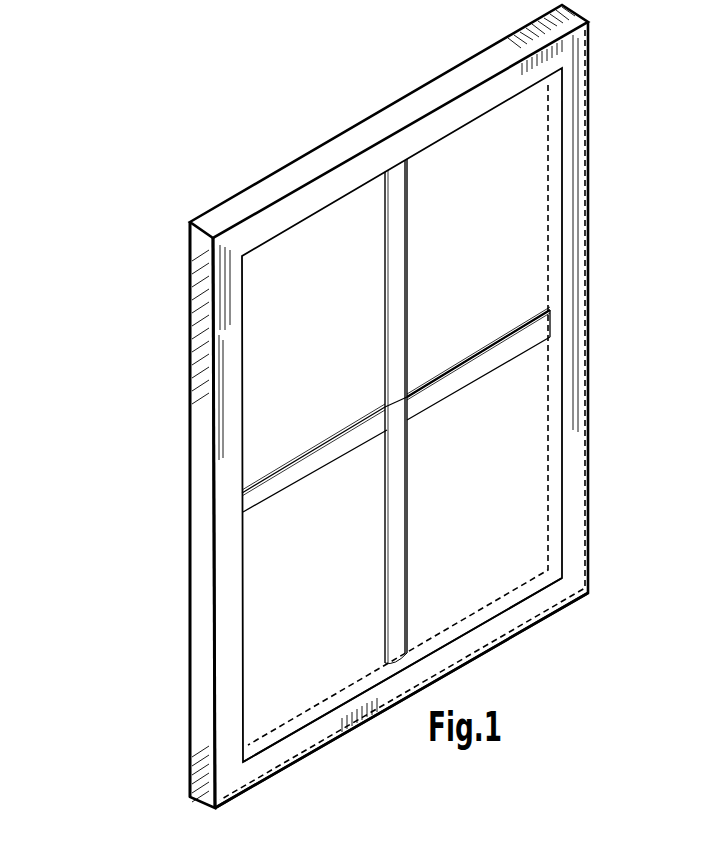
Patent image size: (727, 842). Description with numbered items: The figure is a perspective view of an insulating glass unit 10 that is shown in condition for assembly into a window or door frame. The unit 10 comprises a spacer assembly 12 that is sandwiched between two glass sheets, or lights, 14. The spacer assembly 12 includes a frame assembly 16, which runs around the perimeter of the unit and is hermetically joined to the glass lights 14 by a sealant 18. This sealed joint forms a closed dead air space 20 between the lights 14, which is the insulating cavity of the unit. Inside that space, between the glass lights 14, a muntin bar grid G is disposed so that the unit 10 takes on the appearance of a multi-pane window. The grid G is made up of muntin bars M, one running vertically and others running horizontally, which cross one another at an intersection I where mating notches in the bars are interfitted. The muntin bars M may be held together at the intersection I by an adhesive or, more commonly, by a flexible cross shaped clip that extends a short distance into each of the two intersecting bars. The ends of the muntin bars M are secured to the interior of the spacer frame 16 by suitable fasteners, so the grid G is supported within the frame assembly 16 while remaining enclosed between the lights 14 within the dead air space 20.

The insulating glass unit 10 is at (343, 423).
The spacer assembly 12 is at (198, 803).
The glass sheets (lights) 14 is at (273, 545).
The frame assembly 16 is at (277, 731).
The sealant 18 is at (201, 433).
The dead air space 20 is at (551, 471).
The muntin bar grid G is at (506, 333).
The intersection I is at (444, 339).
The muntin bars M is at (313, 464).